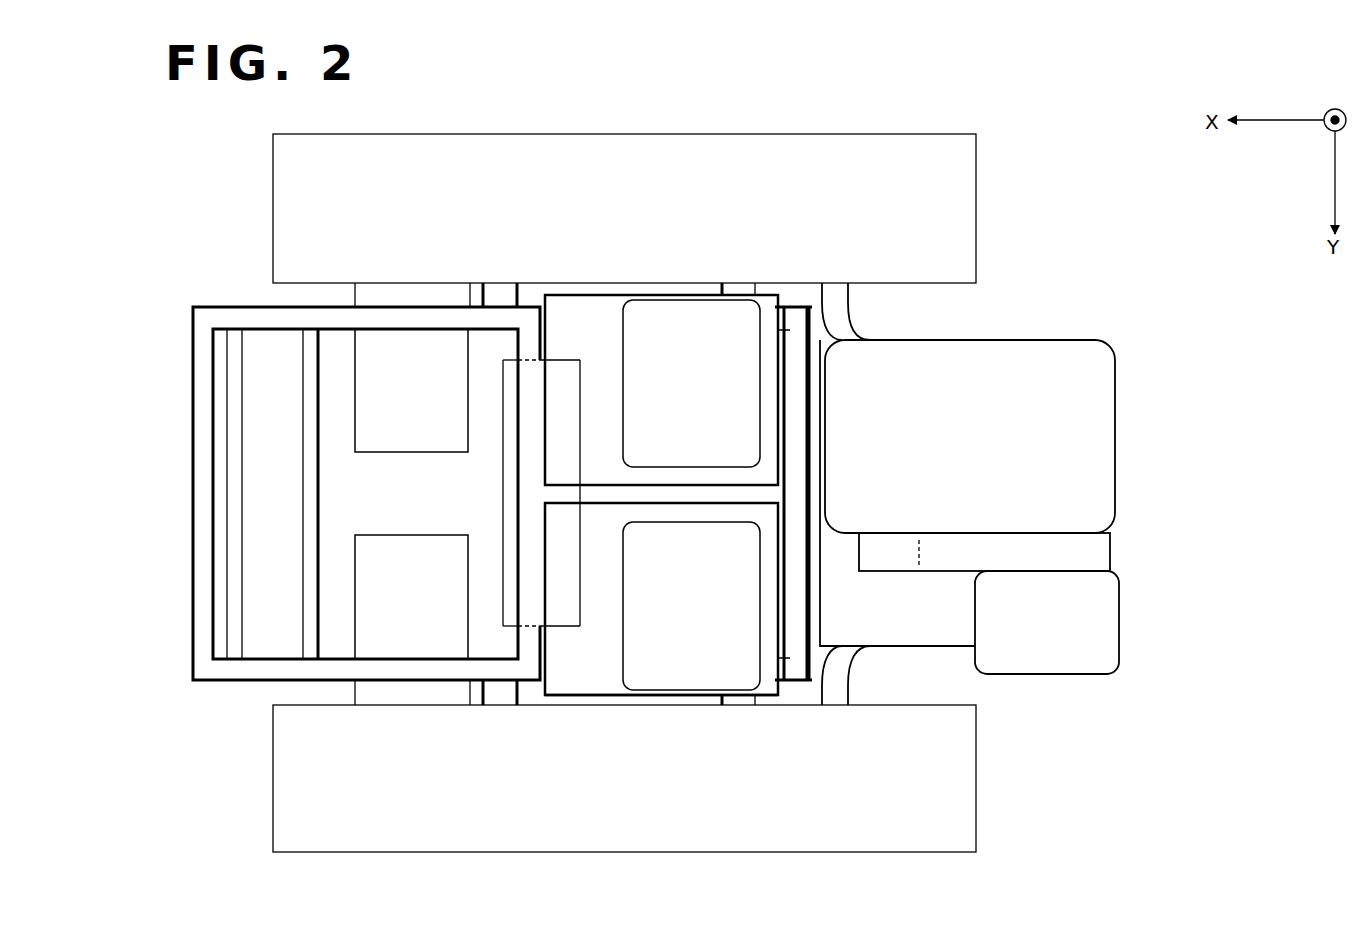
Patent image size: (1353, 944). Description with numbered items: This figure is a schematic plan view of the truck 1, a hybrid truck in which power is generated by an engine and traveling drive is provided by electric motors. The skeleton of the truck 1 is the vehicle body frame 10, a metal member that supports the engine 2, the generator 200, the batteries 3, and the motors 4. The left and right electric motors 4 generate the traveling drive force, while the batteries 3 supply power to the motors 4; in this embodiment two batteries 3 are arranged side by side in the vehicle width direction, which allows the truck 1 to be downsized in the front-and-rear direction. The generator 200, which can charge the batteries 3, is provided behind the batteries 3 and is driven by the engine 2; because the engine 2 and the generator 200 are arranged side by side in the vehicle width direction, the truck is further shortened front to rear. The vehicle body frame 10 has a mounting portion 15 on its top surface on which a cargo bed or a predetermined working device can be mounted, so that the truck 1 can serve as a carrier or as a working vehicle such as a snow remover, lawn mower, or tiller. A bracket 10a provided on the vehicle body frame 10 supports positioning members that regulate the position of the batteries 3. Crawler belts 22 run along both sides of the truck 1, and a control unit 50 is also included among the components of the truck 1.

The truck 1 is at (1083, 222).
The engine 2 is at (1075, 340).
The battery 3 is at (620, 318).
The electric motor 4 is at (355, 356).
The vehicle body frame 10 is at (191, 708).
The bracket 10a is at (570, 706).
The mounting portion 15 is at (243, 309).
The crawler belt 22 is at (273, 175).
The control unit 50 is at (503, 468).
The generator 200 is at (1123, 638).